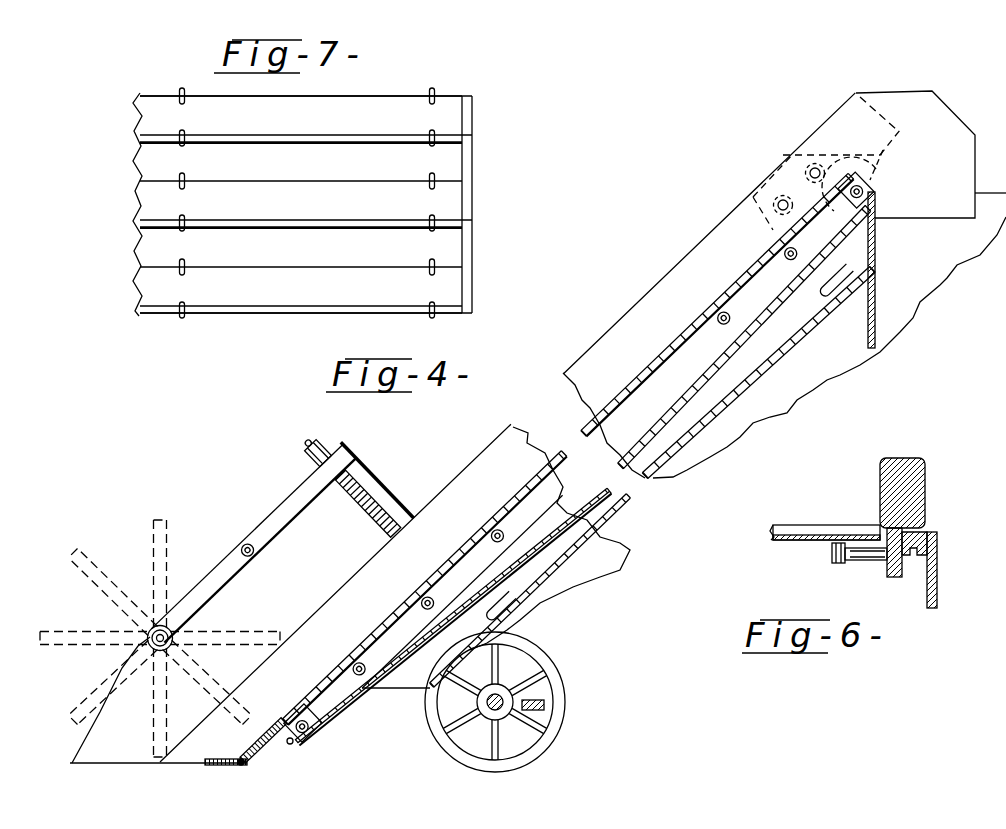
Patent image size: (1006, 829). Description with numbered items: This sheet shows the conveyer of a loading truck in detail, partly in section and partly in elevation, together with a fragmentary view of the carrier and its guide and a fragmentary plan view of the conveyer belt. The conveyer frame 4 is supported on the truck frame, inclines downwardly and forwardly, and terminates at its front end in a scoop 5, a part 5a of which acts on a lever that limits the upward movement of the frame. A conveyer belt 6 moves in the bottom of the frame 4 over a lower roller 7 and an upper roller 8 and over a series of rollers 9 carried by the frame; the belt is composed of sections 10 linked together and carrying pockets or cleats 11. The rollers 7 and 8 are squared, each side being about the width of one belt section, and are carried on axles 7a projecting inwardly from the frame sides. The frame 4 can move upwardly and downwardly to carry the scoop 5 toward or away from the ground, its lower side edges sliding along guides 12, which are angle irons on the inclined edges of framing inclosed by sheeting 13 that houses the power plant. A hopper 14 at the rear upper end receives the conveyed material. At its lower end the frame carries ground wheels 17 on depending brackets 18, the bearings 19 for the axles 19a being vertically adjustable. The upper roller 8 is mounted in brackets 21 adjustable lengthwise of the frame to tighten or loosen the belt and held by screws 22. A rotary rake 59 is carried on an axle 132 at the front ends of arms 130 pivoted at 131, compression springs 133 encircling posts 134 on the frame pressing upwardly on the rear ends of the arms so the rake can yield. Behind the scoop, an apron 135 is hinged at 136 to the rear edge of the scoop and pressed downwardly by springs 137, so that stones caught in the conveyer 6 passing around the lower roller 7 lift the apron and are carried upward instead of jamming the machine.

In FIG. 6, the conveyer frame 4 is at (912, 497).
In FIG. 4, the conveyer frame 4 is at (587, 397).
In FIG. 4, the scoop 5 is at (140, 700).
In FIG. 4, the part of the scoop 5a is at (343, 443).
In FIG. 7, the conveyer belt 6 is at (489, 197).
In FIG. 6, the conveyer belt 6 is at (815, 527).
In FIG. 4, the conveyer belt 6 is at (567, 455).
In FIG. 4, the lower roller 7 is at (313, 730).
In FIG. 4, the axle 7a is at (890, 179).
In FIG. 4, the upper roller 8 is at (877, 192).
In FIG. 6, the rollers 9 is at (842, 566).
In FIG. 4, the rollers 9 is at (673, 328).
In FIG. 7, the belt sections 10 is at (152, 192).
In FIG. 4, the belt sections 10 is at (511, 511).
In FIG. 7, the cleats 11 is at (152, 137).
In FIG. 4, the cleats 11 is at (532, 481).
In FIG. 6, the guides 12 is at (920, 533).
In FIG. 6, the sheeting 13 is at (937, 568).
In FIG. 4, the sheeting 13 is at (907, 295).
In FIG. 4, the hopper 14 is at (934, 244).
In FIG. 4, the ground wheels 17 is at (447, 742).
In FIG. 4, the brackets 18 is at (513, 680).
In FIG. 4, the bearings 19 is at (504, 706).
In FIG. 4, the axles 19a is at (517, 710).
In FIG. 4, the brackets 21 is at (792, 156).
In FIG. 4, the screws 22 is at (782, 200).
In FIG. 4, the rotary rake 59 is at (101, 659).
In FIG. 4, the arms 130 is at (313, 490).
In FIG. 4, the pivot 131 is at (247, 546).
In FIG. 4, the axle 132 is at (152, 633).
In FIG. 4, the compression springs 133 is at (367, 507).
In FIG. 4, the posts 134 is at (315, 446).
In FIG. 4, the apron 135 is at (265, 758).
In FIG. 4, the hinge 136 is at (243, 765).
In FIG. 4, the springs 137 is at (258, 748).